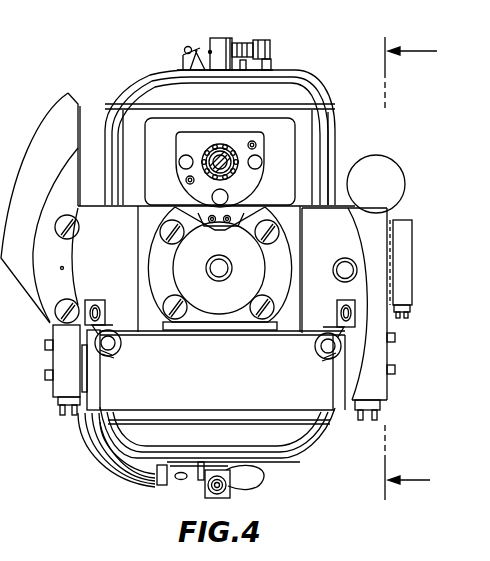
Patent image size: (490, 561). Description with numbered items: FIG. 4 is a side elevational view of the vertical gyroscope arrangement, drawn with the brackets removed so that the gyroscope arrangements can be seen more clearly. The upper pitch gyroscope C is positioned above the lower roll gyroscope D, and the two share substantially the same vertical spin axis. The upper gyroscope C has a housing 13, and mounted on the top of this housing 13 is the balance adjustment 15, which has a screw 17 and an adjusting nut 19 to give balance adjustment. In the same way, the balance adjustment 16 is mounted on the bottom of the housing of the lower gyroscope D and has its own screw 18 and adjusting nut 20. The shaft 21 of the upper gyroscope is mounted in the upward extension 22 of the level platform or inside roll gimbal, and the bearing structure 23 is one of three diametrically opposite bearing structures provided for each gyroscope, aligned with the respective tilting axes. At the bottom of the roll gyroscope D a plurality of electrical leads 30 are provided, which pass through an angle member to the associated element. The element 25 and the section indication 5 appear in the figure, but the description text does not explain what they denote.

The upper pitch gyroscope C is at (314, 90).
The lower roll gyroscope D is at (314, 451).
The housing 13 is at (329, 158).
The balance adjustment 15 is at (272, 50).
The balance adjustment 16 is at (231, 491).
The screw 17 is at (212, 52).
The screw 18 is at (209, 488).
The adjusting nut 19 is at (259, 42).
The adjusting nut 20 is at (252, 482).
The shaft 21 is at (207, 165).
The upward extension 22 is at (288, 189).
The bearing structure 23 is at (222, 150).
The side bracket block 25 is at (370, 376).
The electrical leads 30 is at (102, 470).
The section line 5- 5 is at (417, 268).